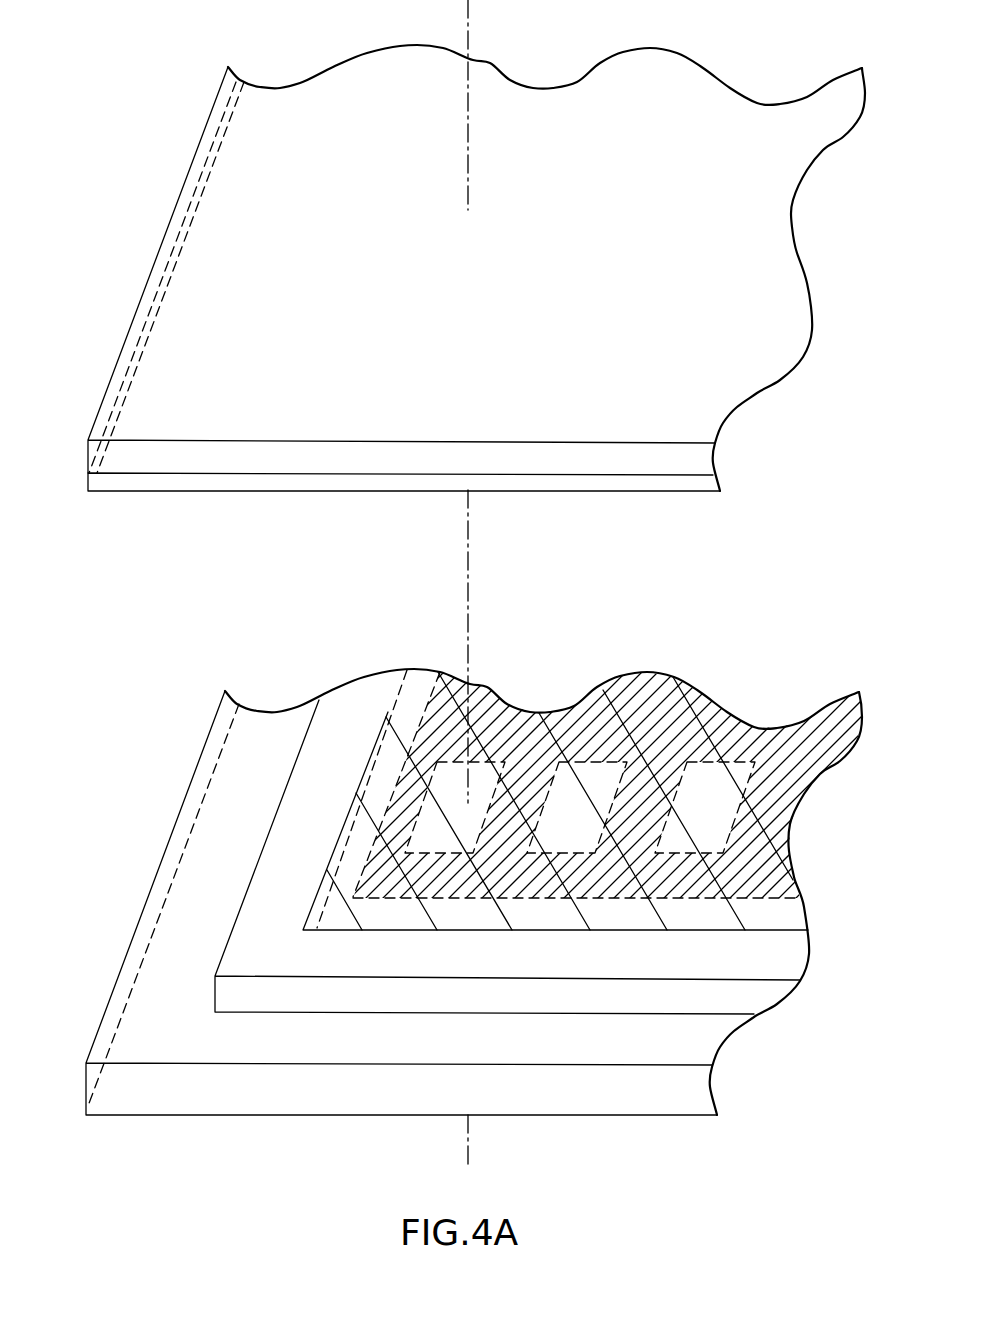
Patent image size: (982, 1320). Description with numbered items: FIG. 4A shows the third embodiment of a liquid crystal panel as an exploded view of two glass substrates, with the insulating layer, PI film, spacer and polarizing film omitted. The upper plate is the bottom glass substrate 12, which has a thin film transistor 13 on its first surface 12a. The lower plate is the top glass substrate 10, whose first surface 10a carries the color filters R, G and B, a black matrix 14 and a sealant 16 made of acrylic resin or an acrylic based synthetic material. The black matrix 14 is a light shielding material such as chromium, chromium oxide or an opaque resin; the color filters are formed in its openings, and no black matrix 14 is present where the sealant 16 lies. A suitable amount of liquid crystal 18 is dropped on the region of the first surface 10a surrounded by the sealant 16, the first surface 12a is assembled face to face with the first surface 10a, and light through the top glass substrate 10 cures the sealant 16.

The top glass substrate 10 is at (117, 1088).
The first surface of the top glass substrate 10a is at (187, 1030).
The bottom glass substrate 12 is at (120, 465).
The first surface of the bottom glass substrate 12a is at (183, 477).
The thin film transistor 13 is at (253, 483).
The black matrix 14 is at (403, 815).
The sealant 16 is at (310, 955).
The liquid crystal 18 is at (793, 848).